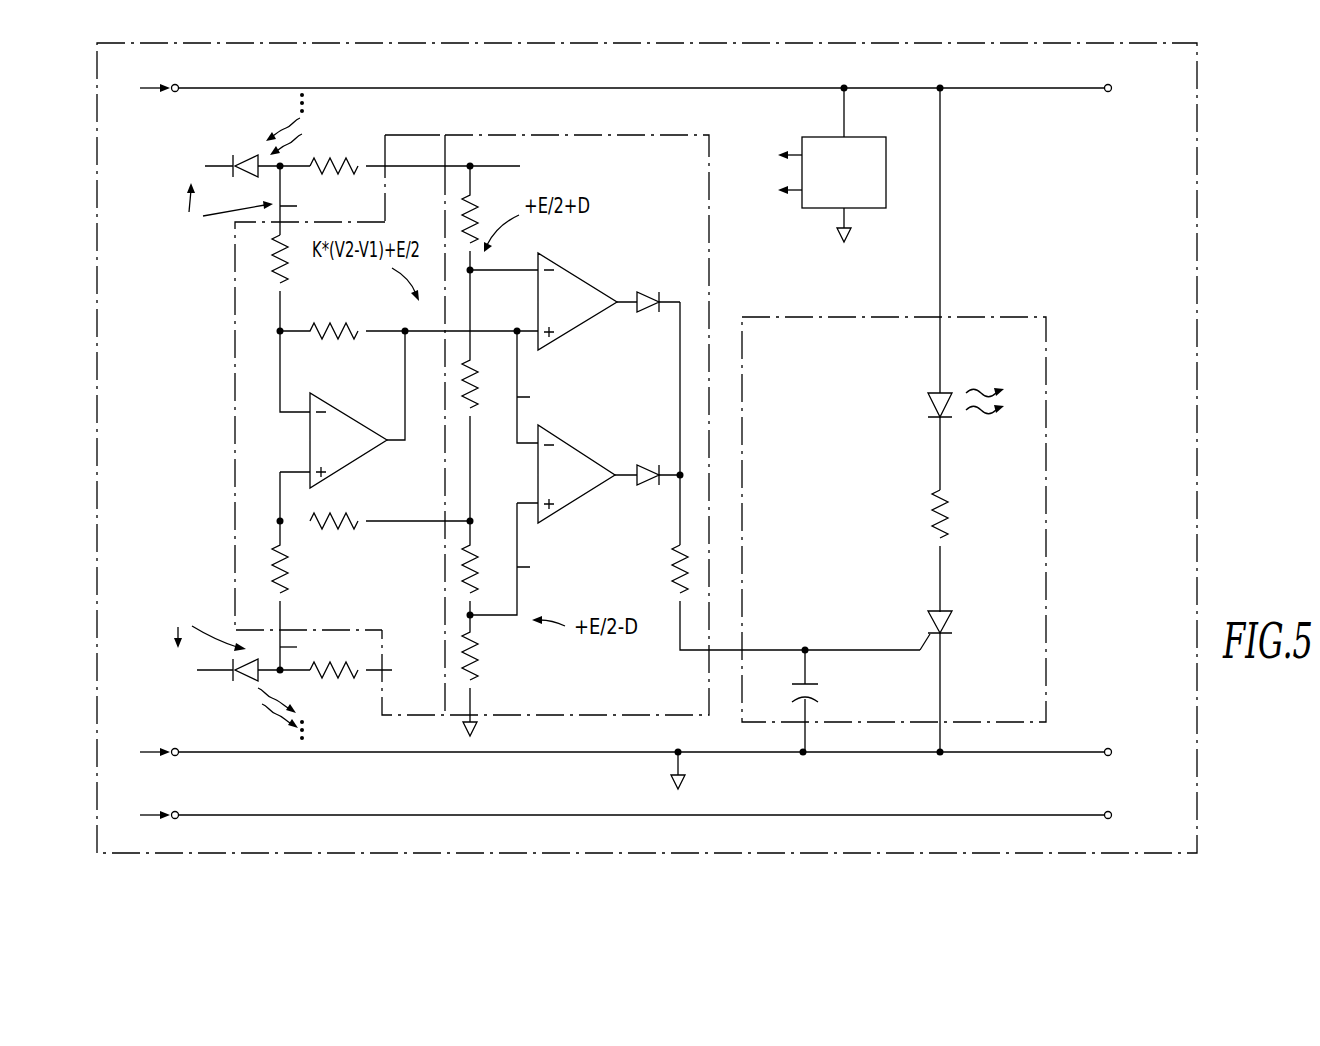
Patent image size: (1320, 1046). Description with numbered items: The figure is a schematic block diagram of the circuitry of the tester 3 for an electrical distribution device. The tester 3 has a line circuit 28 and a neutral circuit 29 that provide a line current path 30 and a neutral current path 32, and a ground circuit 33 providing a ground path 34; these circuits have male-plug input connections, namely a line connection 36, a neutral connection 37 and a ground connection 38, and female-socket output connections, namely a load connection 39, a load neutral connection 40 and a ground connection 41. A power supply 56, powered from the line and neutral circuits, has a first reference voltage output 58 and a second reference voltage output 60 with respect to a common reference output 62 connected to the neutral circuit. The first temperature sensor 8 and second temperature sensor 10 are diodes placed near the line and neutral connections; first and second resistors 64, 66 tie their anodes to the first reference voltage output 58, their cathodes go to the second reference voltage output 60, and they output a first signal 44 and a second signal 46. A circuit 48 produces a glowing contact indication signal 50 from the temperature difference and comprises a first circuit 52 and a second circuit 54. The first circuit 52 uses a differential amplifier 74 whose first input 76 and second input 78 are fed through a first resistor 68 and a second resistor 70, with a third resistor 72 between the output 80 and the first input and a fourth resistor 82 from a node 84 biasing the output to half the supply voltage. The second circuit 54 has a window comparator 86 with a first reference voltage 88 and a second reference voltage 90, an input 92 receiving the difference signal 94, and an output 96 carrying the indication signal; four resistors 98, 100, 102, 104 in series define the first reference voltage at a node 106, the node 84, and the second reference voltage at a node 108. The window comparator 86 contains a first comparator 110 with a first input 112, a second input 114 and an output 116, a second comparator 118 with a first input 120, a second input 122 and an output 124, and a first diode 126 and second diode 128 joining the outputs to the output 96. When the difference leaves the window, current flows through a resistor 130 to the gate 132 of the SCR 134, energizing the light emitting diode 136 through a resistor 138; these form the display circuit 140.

The tester 3 is at (1197, 181).
The first temperature sensor 8 is at (250, 158).
The second temperature sensor 10 is at (252, 682).
The line circuit 28 is at (148, 77).
The neutral circuit 29 is at (143, 751).
The line current path 30 is at (583, 87).
The neutral current path 32 is at (390, 752).
The ground circuit 33 is at (147, 802).
The ground path 34 is at (408, 814).
The line connection 36 is at (179, 85).
The neutral connection 37 is at (180, 755).
The ground connection 38 is at (180, 818).
The load connection 39 is at (1110, 91).
The load neutral connection 40 is at (1110, 749).
The ground connection 41 is at (1110, 812).
The first signal 44 is at (248, 200).
The second signal 46 is at (243, 630).
The circuit 48 is at (228, 307).
The glowing contact indication signal 50 is at (678, 528).
The first circuit 52 is at (416, 130).
The second circuit 54 is at (510, 135).
The power supply 56 is at (877, 138).
The first reference voltage output 58 is at (513, 166).
The second reference voltage output 60 is at (215, 163).
The common reference output 62 is at (478, 700).
The first resistor 64 is at (338, 163).
The second resistor 66 is at (336, 680).
The first resistor 68 is at (287, 277).
The second resistor 70 is at (290, 581).
The third resistor 72 is at (338, 328).
The differential amplifier 74 is at (332, 404).
The first input 76 is at (308, 416).
The second input 78 is at (308, 470).
The output 80 is at (387, 437).
The fourth resistor 82 is at (340, 530).
The node 84 is at (468, 518).
The window comparator 86 is at (630, 260).
The first reference voltage 88 is at (517, 268).
The second reference voltage 90 is at (514, 559).
The input 92 is at (483, 340).
The difference signal 94 is at (537, 387).
The output 96 is at (678, 480).
The resistor 98 is at (477, 207).
The resistor 100 is at (465, 372).
The resistor 102 is at (465, 563).
The resistor 104 is at (478, 670).
The node 106 is at (468, 268).
The node 108 is at (474, 620).
The first comparator 110 is at (566, 269).
The first input 112 is at (535, 279).
The second input 114 is at (535, 326).
The output 116 is at (618, 306).
The second comparator 118 is at (566, 447).
The first input 120 is at (535, 447).
The second input 122 is at (535, 501).
The output 124 is at (615, 480).
The first diode 126 is at (650, 291).
The second diode 128 is at (646, 462).
The resistor 130 is at (675, 575).
The gate 132 is at (918, 656).
The SCR 134 is at (928, 613).
The light emitting diode 136 is at (928, 392).
The resistor 138 is at (928, 512).
The display circuit 140 is at (1048, 490).